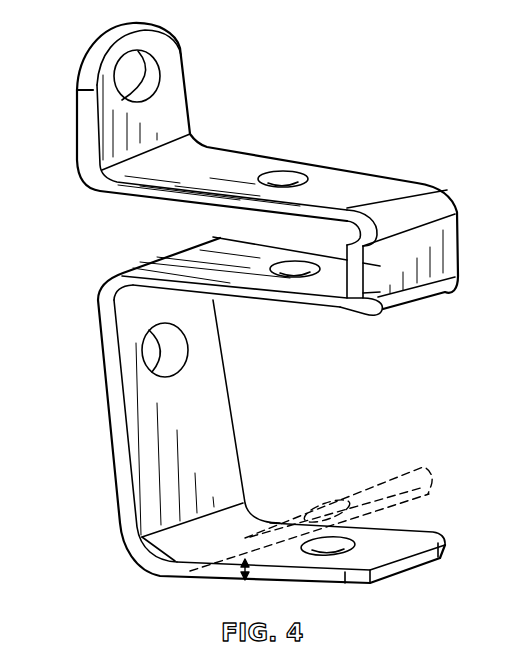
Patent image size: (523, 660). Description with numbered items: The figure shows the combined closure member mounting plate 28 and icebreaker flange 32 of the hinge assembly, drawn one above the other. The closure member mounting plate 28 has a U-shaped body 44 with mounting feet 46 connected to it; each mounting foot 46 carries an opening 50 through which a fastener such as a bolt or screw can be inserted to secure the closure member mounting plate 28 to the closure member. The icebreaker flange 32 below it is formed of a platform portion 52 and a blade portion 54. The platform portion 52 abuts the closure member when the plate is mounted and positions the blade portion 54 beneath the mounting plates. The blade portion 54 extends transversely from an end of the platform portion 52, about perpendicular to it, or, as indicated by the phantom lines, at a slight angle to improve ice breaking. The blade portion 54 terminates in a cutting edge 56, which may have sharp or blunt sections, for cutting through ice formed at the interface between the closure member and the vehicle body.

The closure member mounting plate 28 is at (353, 47).
The icebreaker flange 32 is at (110, 415).
The U-shaped body 44 is at (337, 182).
The mounting feet 46 is at (172, 101).
The openings 50 is at (130, 75).
The platform portion 52 is at (217, 450).
The blade portion 54 is at (292, 527).
The cutting edge 56 is at (427, 532).